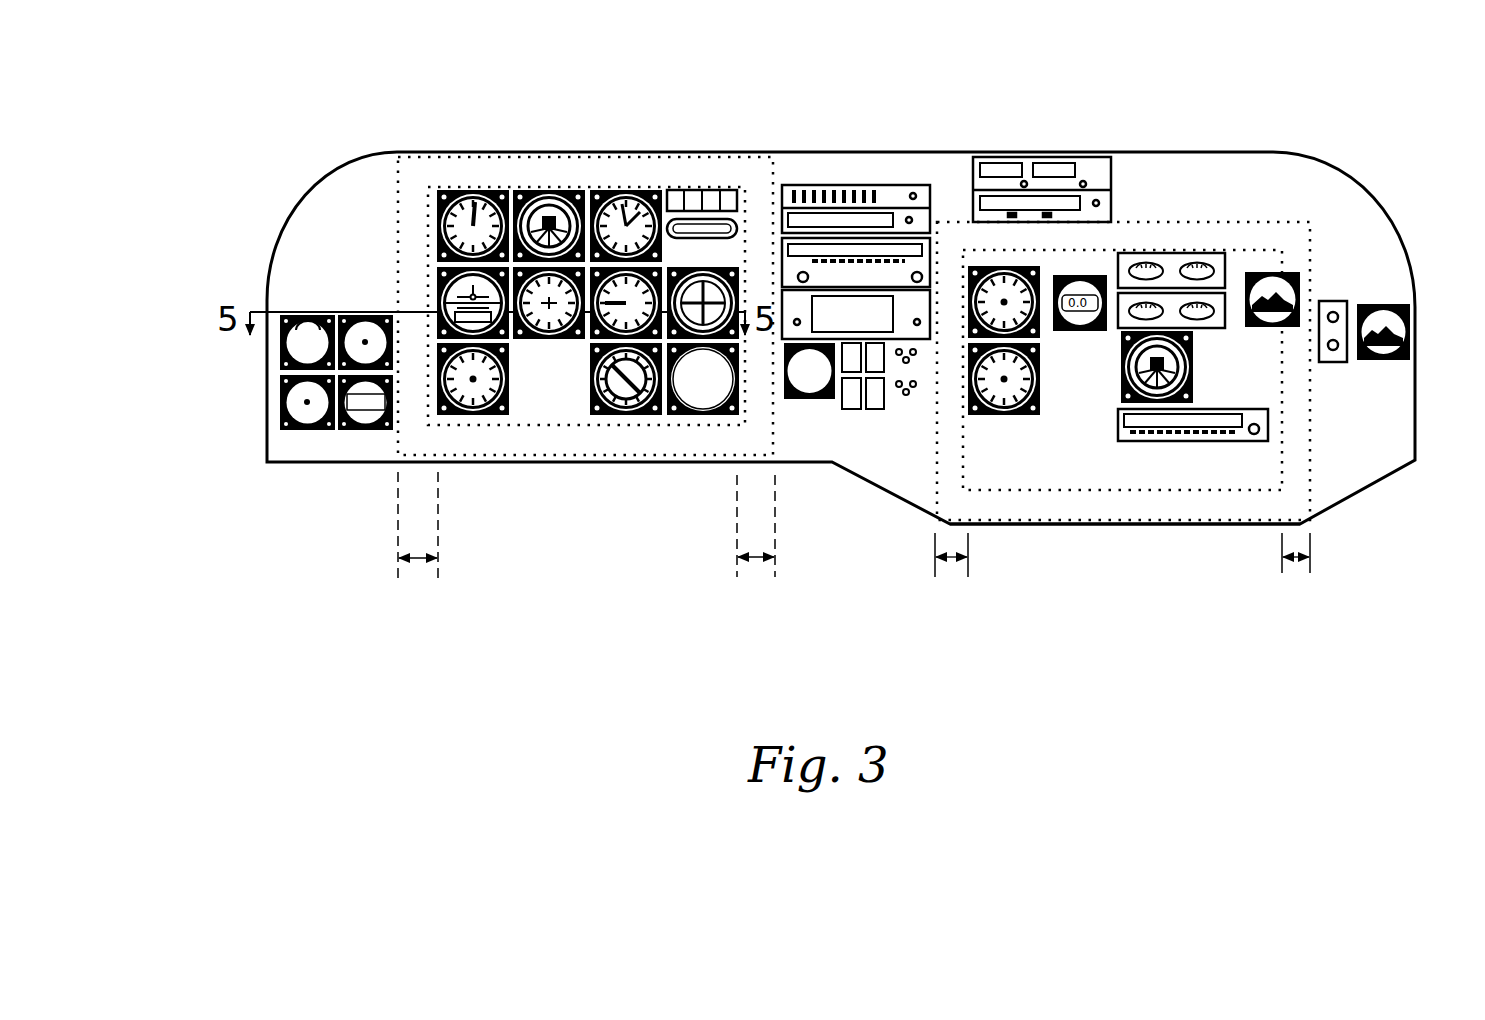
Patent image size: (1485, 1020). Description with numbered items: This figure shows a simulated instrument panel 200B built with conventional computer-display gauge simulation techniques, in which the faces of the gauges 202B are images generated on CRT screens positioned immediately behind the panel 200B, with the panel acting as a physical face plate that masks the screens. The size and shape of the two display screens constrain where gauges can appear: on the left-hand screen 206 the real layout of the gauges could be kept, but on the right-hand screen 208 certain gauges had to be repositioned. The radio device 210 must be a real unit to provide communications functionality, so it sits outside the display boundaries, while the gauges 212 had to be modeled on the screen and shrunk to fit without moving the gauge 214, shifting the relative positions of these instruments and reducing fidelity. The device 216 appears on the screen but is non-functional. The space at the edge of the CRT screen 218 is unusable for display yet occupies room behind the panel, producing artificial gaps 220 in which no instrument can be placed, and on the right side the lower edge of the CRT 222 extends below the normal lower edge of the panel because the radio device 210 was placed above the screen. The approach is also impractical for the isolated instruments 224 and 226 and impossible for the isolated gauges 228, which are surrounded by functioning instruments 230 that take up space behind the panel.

The panel 200B is at (807, 311).
The faces of the gauges 202B is at (542, 81).
The left-hand screen 206 is at (586, 347).
The screen 208 is at (1122, 406).
The radio device 210 is at (1088, 132).
The gauges 212 is at (1213, 203).
The gauge 214 is at (1287, 431).
The device 216 is at (1277, 493).
The space at the edge of the CRT screen 218 is at (854, 402).
The artificial gaps 220 is at (854, 562).
The lower edge of the CRT 222 is at (1125, 551).
The isolated instruments 224 is at (320, 435).
The isolated instruments 226 is at (1403, 222).
The isolated gauges 228 is at (840, 433).
The functioning instruments 230 is at (703, 89).